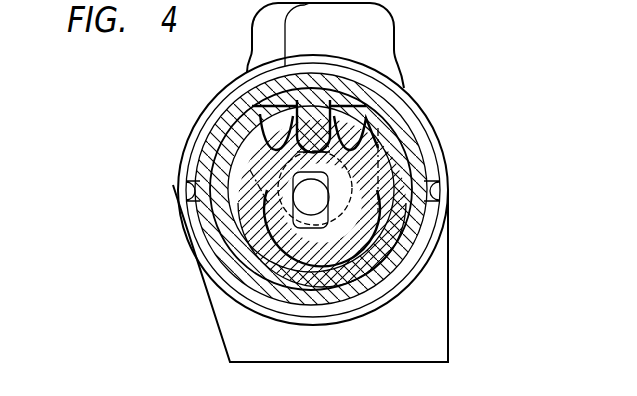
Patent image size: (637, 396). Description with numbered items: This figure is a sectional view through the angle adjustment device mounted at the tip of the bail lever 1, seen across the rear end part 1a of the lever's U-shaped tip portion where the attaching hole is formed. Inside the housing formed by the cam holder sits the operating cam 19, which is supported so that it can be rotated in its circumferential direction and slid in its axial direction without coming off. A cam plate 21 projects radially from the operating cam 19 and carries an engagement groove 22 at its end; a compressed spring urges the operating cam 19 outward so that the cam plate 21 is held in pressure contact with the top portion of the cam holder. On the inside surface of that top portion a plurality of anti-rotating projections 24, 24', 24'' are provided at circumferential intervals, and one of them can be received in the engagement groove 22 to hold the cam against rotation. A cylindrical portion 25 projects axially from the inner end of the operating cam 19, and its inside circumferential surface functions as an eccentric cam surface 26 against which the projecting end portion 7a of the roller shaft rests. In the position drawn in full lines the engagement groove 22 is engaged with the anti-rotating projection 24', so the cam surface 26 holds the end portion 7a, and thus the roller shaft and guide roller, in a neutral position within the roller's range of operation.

The bail lever 1 is at (401, 63).
The rear end part 1a is at (427, 110).
The other end portion of the roller shaft 7a is at (228, 231).
The operating cam 19 is at (381, 214).
The cam plate 21 is at (245, 103).
The engagement groove 22 is at (275, 125).
The anti-rotating projection 24 is at (222, 154).
The anti-rotating projection 24' is at (315, 127).
The anti-rotating projection 24'' is at (409, 159).
The cylindrical portion 25 is at (290, 262).
The eccentric cam surface 26 is at (356, 262).